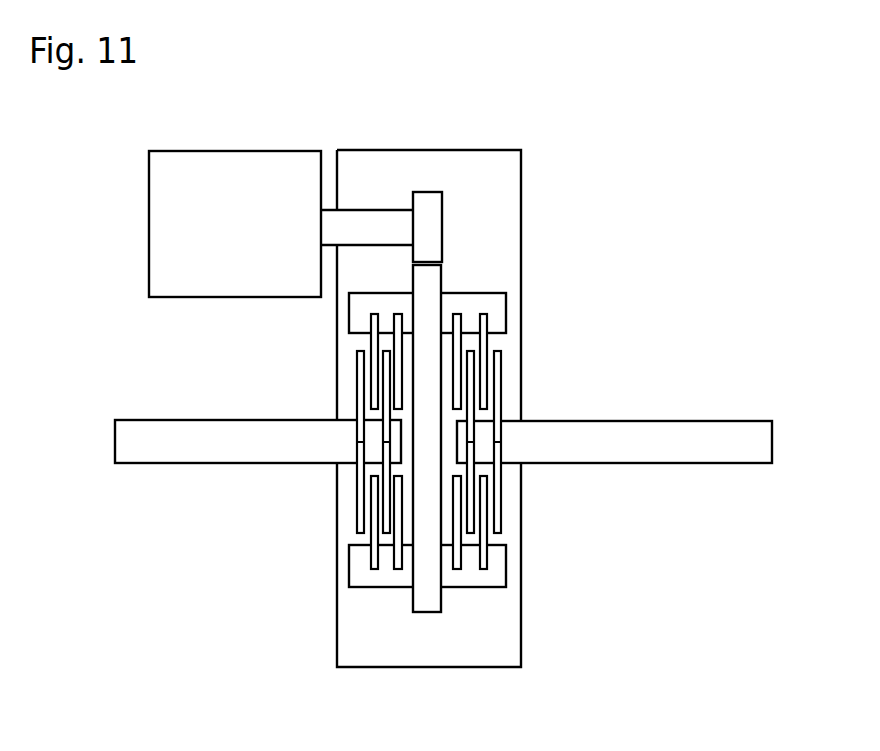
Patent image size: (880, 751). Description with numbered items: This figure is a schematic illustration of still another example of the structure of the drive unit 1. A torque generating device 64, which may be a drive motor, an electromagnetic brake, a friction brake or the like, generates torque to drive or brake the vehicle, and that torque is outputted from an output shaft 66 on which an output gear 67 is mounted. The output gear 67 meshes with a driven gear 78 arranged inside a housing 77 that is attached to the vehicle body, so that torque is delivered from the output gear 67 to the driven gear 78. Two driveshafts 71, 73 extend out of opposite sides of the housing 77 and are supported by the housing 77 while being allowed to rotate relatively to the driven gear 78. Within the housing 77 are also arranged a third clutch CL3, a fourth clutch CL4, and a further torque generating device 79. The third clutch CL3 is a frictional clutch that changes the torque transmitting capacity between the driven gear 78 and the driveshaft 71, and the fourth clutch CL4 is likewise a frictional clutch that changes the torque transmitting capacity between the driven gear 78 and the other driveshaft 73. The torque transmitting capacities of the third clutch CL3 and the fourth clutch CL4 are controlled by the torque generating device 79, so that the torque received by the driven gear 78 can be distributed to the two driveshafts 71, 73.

The drive unit 1 is at (659, 165).
The torque generating device 64 is at (229, 166).
The output shaft 66 is at (382, 210).
The output gear 67 is at (428, 205).
The driveshaft 71 is at (213, 438).
The driveshaft 73 is at (667, 440).
The housing 77 is at (505, 181).
The driven gear 78 is at (433, 275).
The torque generating device 79 is at (473, 302).
The third clutch CL3 is at (318, 513).
The fourth clutch CL4 is at (546, 512).